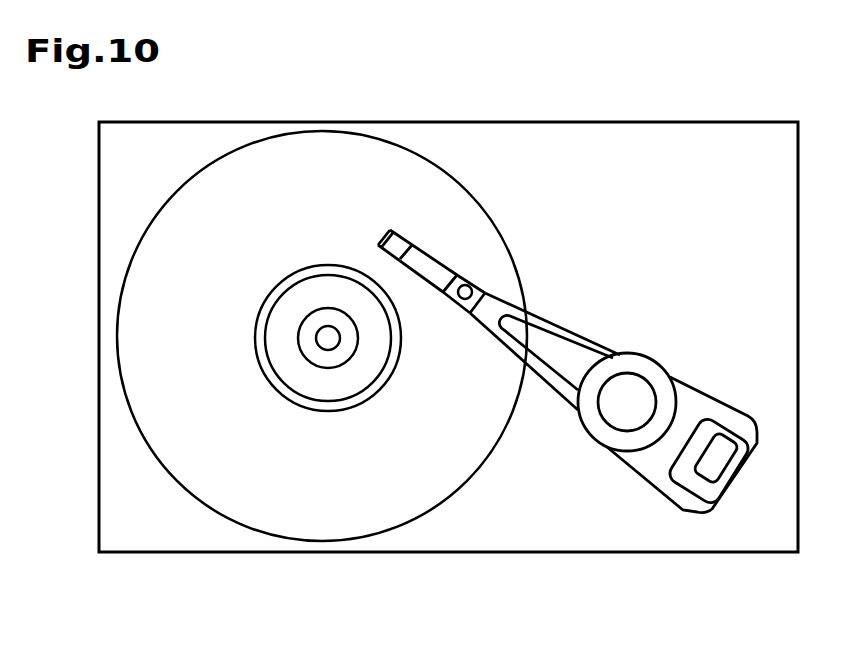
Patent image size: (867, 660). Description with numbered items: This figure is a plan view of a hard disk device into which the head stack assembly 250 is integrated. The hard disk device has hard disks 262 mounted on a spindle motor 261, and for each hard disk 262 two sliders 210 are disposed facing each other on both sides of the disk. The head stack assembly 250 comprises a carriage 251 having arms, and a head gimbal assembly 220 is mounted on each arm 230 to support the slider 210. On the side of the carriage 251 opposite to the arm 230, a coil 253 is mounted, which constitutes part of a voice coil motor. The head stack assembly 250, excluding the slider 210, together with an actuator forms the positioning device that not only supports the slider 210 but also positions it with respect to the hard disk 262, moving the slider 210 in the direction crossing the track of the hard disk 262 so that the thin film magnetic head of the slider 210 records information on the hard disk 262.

The slider 210 is at (397, 231).
The head gimbal assembly 220 is at (437, 290).
The arm 230 is at (555, 400).
The head stack assembly 250 is at (630, 468).
The carriage 251 is at (637, 354).
The coil 253 is at (738, 478).
The spindle motor 261 is at (328, 344).
The hard disk 262 is at (250, 530).